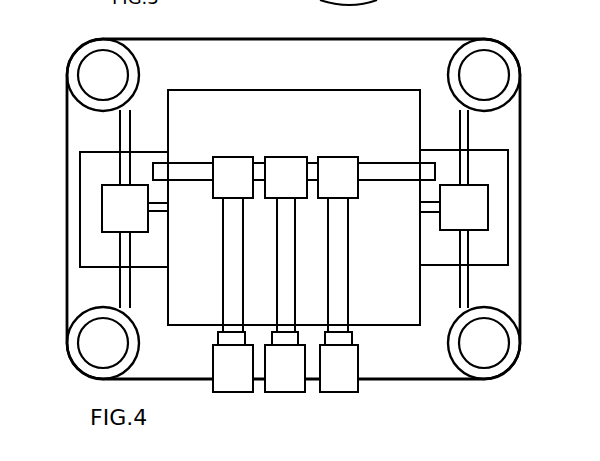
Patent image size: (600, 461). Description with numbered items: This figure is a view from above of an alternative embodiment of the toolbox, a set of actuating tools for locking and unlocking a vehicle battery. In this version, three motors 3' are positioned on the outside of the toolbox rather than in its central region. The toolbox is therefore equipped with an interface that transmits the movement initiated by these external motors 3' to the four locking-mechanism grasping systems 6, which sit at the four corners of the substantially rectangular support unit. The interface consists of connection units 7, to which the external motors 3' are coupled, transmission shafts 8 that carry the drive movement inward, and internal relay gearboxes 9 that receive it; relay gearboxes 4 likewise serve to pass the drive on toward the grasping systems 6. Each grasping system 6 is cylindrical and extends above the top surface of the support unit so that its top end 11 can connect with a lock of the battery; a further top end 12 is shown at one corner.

The relay gearbox 4 is at (224, 0).
The locking-mechanism grasping system 6 is at (90, 38).
The top end 11 is at (107, 66).
The roller axle 12 is at (487, 65).
The transmission shaft 8 is at (333, 292).
The internal relay gearbox 9 is at (343, 157).
The connection unit 7 is at (218, 342).
The motor 3' is at (285, 394).